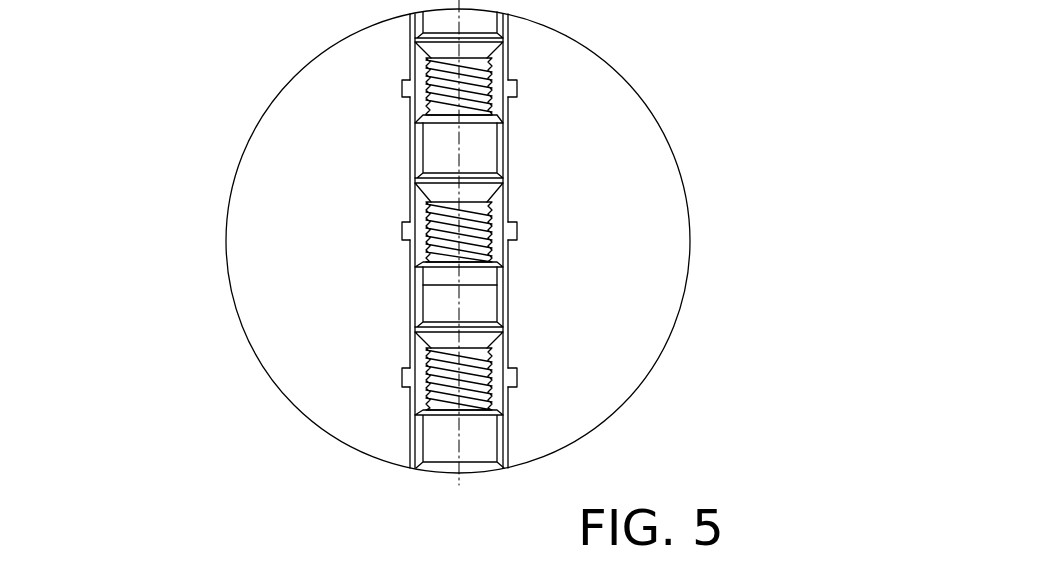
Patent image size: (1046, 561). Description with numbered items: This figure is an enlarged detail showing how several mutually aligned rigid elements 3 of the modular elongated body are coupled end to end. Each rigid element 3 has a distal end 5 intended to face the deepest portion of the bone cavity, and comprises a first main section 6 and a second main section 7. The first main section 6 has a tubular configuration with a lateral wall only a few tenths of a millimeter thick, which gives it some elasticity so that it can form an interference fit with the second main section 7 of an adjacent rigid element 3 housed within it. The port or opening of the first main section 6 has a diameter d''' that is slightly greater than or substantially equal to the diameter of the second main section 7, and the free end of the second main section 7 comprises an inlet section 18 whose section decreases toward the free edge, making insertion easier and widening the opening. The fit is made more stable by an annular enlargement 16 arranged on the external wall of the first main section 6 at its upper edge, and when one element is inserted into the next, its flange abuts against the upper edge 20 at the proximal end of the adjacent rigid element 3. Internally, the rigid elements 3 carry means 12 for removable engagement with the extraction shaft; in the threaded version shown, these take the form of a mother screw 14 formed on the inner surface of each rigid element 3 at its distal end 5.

The rigid element 3 is at (518, 46).
The distal end 5 is at (527, 443).
The first main section 6 is at (508, 297).
The second main section 7 is at (508, 263).
The means for removable engagement 12 is at (405, 250).
The mother screw 14 is at (438, 230).
The annular enlargement 16 is at (410, 124).
The inlet section 18 is at (508, 320).
The upper edge 20 is at (400, 90).
The diameter of the port or opening d''' is at (407, 330).